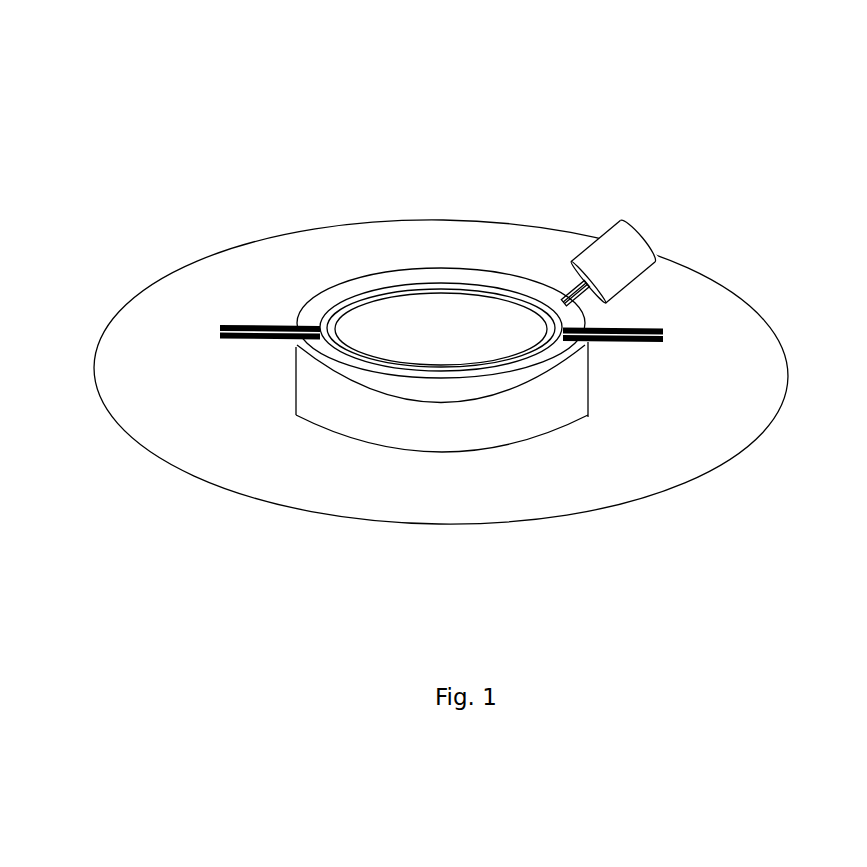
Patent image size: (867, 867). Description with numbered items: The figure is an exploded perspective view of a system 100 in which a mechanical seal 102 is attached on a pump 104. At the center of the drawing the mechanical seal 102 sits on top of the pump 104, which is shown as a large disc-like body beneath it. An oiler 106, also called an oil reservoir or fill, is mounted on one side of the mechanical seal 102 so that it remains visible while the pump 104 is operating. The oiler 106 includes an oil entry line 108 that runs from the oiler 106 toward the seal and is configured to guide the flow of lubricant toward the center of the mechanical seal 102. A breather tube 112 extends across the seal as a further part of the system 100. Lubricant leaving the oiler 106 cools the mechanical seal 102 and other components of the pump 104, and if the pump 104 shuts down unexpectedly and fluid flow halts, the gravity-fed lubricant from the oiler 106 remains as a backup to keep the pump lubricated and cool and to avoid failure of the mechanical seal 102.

The system 100 is at (198, 117).
The mechanical seal 102 is at (405, 283).
The pump 104 is at (667, 445).
The oiler 106 is at (604, 223).
The oil entry line 108 is at (573, 278).
The breather tube 112 is at (268, 322).